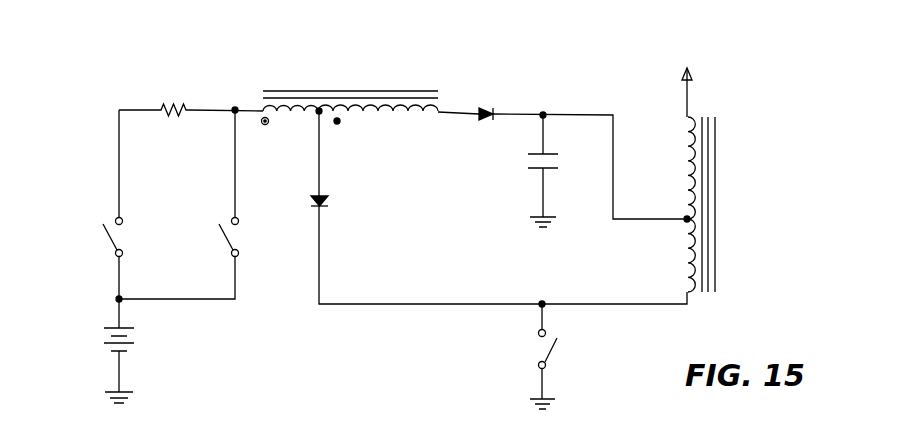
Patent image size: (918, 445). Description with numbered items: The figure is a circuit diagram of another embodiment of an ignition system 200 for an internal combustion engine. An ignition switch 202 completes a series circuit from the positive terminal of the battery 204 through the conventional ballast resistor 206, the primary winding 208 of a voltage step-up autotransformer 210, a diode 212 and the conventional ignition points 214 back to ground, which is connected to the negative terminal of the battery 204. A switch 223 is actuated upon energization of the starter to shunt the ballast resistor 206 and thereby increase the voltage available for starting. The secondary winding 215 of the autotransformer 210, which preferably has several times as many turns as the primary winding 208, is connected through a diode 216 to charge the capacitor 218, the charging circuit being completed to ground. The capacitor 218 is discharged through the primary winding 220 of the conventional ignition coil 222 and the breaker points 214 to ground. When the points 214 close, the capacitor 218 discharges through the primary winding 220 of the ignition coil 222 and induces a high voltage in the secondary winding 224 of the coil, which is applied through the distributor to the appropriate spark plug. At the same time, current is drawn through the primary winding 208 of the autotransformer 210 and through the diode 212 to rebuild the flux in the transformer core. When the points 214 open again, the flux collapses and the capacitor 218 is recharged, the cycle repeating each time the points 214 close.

The ignition system 200 is at (196, 52).
The ignition switch 202 is at (108, 245).
The battery 204 is at (128, 328).
The ballast resistor 206 is at (163, 108).
The primary winding 208 is at (305, 115).
The autotransformer 210 is at (399, 91).
The diode 212 is at (326, 208).
The ignition points 214 is at (558, 338).
The secondary winding 215 is at (432, 115).
The diode 216 is at (482, 110).
The capacitor 218 is at (526, 164).
The primary winding 220 is at (687, 249).
The ignition coil 222 is at (718, 238).
The switch 223 is at (225, 245).
The secondary winding 224 is at (688, 159).